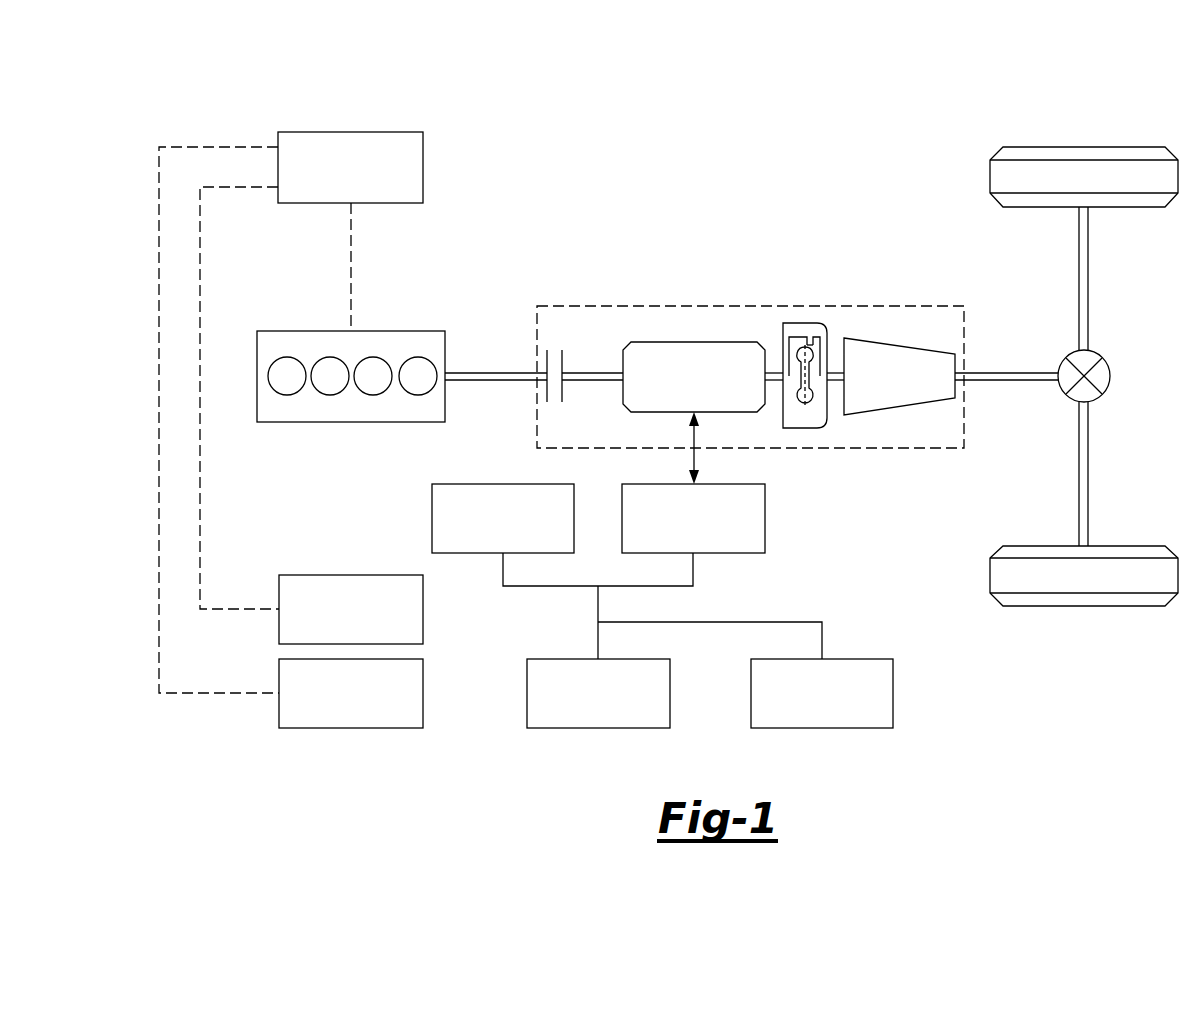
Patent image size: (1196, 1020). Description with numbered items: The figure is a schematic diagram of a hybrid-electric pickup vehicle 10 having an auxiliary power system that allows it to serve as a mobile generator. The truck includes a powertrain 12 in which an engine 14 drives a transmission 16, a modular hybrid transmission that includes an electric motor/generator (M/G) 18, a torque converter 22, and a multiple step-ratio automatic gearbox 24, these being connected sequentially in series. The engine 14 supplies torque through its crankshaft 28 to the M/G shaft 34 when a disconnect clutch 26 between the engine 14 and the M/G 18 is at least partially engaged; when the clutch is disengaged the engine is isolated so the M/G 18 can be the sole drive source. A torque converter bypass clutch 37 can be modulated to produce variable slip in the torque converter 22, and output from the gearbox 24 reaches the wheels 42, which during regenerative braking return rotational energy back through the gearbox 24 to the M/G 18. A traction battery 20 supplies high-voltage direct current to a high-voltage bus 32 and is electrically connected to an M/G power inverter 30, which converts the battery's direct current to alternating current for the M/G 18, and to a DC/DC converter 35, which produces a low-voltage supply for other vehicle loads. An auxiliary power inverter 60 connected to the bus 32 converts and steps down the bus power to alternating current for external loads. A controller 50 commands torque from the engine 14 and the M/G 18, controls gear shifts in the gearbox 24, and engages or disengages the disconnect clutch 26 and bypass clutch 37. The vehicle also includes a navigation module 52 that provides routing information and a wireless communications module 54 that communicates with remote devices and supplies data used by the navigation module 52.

The hybrid-electric pickup vehicle 10 is at (928, 77).
The powertrain 12 is at (746, 193).
The engine 14 is at (275, 331).
The transmission 16 is at (735, 306).
The electric motor/generator (M/G) 18 is at (668, 342).
The traction battery 20 is at (670, 694).
The torque converter 22 is at (800, 428).
The gearbox 24 is at (890, 415).
The disconnect clutch 26 is at (561, 402).
The crankshaft 28 is at (517, 373).
The M/G power inverter 30 is at (765, 521).
The high-voltage bus 32 is at (598, 610).
The M/G shaft 34 is at (596, 373).
The DC/DC converter 35 is at (432, 521).
The torque converter bypass clutch 37 is at (812, 338).
The wheels 42 is at (1083, 606).
The controller 50 is at (352, 132).
The navigation module 52 is at (423, 694).
The wireless communications module 54 is at (423, 609).
The auxiliary power inverter 60 is at (893, 694).